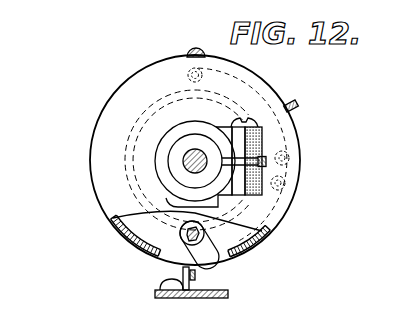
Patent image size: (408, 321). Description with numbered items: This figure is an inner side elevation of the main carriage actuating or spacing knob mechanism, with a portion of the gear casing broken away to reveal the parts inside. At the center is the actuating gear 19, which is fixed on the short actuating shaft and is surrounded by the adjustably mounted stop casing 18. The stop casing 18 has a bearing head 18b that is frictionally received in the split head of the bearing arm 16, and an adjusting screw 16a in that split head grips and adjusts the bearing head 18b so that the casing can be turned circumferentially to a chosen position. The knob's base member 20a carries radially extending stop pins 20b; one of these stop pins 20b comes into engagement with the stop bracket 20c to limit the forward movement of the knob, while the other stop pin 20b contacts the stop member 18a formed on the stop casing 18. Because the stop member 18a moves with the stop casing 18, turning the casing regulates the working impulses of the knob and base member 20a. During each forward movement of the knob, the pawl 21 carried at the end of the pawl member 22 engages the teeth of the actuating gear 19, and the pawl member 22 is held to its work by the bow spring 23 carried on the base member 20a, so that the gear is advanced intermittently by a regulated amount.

The bearing arm 16 is at (262, 140).
The adjusting screw 16a is at (238, 120).
The stop casing 18 is at (252, 243).
The stop member 18a is at (193, 48).
The bearing head 18b is at (194, 155).
The actuating gear 19 is at (181, 232).
The base member 20a is at (139, 77).
The stop pin 20b is at (292, 100).
The stop bracket 20c is at (181, 272).
The pawl 21 is at (190, 242).
The pawl member 22 is at (240, 254).
The bow spring 23 is at (283, 119).